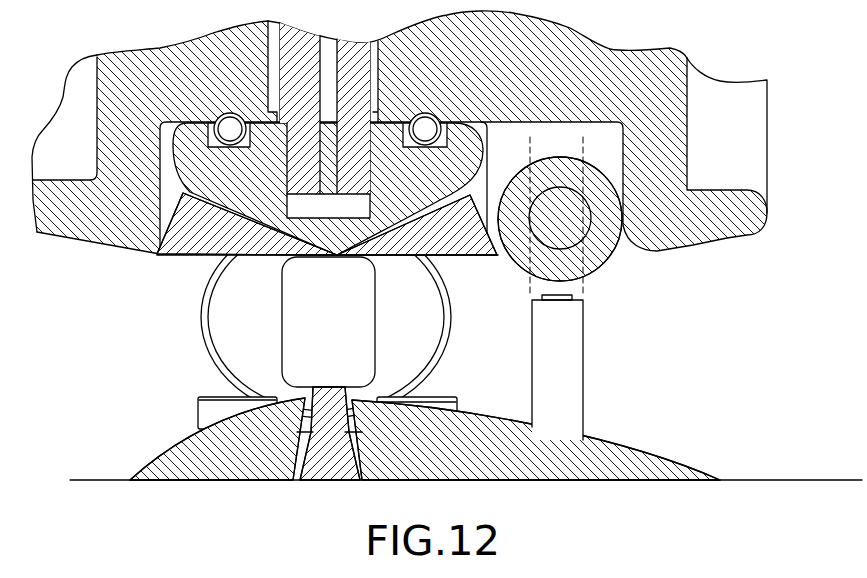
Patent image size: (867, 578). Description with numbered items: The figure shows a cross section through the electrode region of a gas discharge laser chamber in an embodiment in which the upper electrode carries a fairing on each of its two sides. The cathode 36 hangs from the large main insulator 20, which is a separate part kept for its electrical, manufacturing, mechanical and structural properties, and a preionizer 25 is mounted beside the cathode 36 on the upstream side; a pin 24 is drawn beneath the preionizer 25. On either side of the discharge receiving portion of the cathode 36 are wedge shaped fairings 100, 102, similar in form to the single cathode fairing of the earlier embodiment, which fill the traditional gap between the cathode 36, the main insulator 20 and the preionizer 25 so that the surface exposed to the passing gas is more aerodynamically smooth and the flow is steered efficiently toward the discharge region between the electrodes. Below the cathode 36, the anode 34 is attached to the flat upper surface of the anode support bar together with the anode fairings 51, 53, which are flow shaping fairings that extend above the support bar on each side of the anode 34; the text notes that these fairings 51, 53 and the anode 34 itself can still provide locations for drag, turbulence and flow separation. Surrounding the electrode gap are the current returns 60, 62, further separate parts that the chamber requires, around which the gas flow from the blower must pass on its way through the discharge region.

The main insulator 20 is at (733, 232).
The pin 24 is at (572, 360).
The preionizer 25 is at (608, 267).
The anode 34 is at (330, 392).
The cathode 36 is at (193, 173).
The anode fairing 51 is at (477, 437).
The anode fairing 53 is at (190, 460).
The current return 60 is at (206, 347).
The current return 62 is at (448, 338).
The wedge shaped fairing 100 is at (459, 242).
The wedge shaped fairing 102 is at (182, 245).